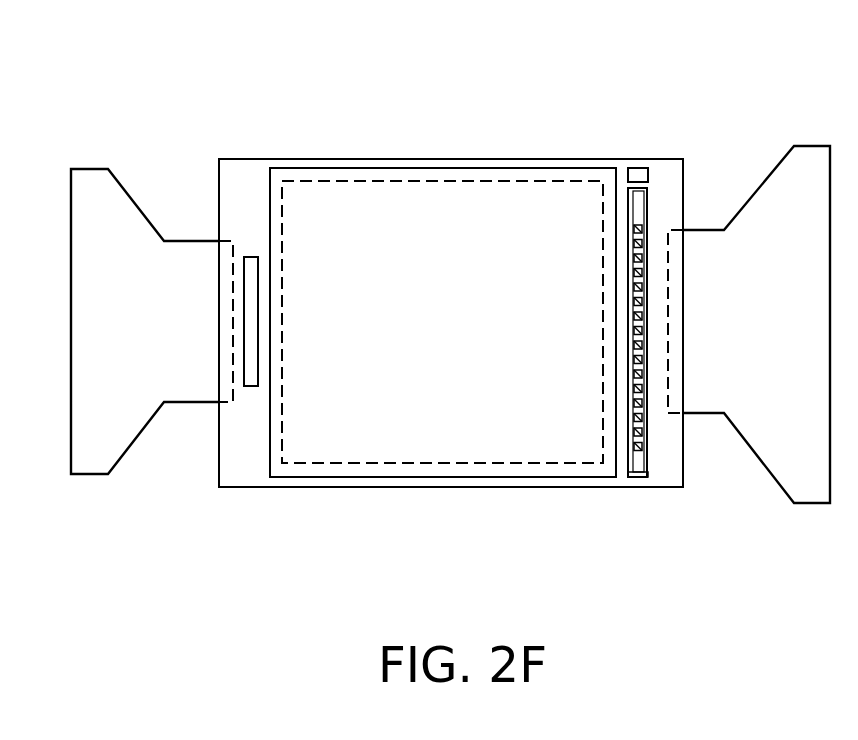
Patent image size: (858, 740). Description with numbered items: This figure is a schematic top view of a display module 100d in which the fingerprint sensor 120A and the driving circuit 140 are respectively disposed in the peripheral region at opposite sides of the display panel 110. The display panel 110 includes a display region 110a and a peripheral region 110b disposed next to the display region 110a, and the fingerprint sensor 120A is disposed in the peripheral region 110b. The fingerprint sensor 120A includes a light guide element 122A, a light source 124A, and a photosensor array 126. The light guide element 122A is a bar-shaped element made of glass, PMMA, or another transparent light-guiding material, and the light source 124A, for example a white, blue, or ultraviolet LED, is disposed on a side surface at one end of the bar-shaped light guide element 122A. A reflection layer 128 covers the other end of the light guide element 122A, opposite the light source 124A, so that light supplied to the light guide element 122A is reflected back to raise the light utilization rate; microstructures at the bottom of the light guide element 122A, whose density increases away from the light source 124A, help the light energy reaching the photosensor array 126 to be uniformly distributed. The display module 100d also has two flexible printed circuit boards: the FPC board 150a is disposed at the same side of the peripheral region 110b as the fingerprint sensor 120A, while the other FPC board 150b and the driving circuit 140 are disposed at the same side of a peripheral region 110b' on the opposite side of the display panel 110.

The display module 100d is at (573, 134).
The display panel 110 is at (430, 193).
The display region 110a is at (507, 180).
The peripheral region 110b' is at (250, 238).
The peripheral region 110b is at (672, 404).
The fingerprint sensor 120A is at (747, 54).
The light guide element 122A is at (637, 202).
The light source 124A is at (638, 175).
The photosensor array 126 is at (647, 227).
The reflection layer 128 is at (638, 477).
The driving circuit 140 is at (249, 378).
The flexible printed circuit board 150a is at (817, 155).
The flexible printed circuit board 150b is at (89, 192).